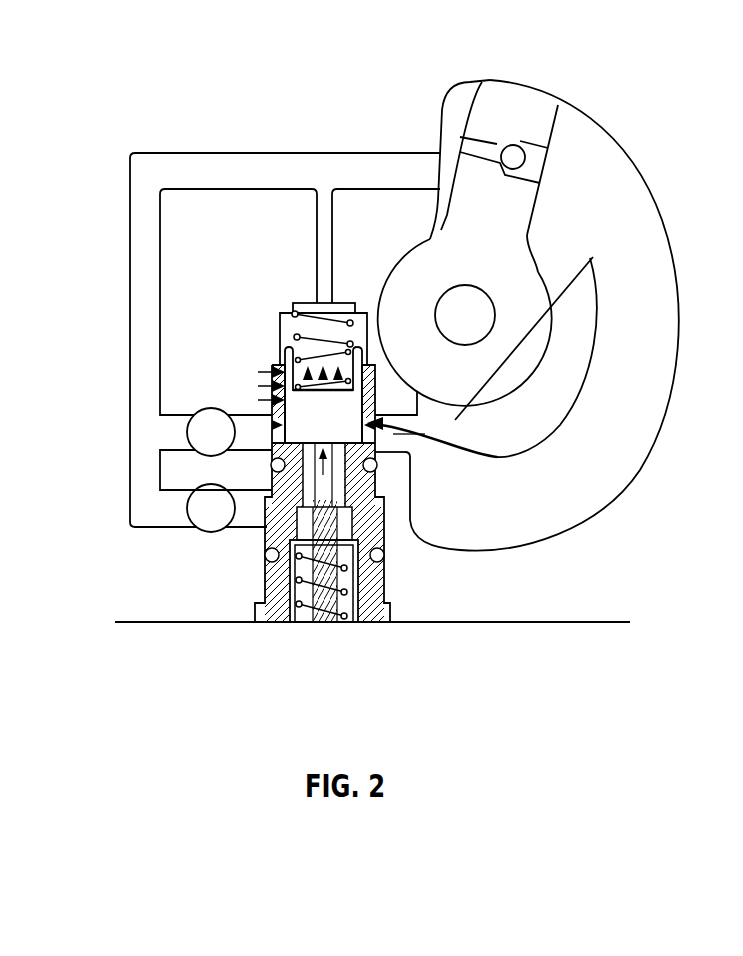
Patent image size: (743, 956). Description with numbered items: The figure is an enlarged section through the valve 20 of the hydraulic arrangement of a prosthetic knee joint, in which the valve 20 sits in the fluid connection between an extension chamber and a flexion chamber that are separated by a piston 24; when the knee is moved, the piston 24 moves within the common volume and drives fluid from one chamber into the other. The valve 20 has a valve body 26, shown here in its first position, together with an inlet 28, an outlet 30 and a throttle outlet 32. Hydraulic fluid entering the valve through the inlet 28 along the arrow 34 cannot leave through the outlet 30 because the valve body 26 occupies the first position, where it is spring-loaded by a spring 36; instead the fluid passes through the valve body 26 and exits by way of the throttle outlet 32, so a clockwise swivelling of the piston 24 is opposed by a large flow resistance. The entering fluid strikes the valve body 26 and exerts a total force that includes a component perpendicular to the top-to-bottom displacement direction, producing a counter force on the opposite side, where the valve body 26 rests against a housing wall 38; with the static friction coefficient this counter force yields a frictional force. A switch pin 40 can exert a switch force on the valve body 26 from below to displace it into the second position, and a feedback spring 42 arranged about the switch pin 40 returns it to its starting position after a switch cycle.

The valve 20 is at (247, 591).
The piston 24 is at (513, 205).
The valve body 26 is at (346, 420).
The inlet 28 is at (593, 257).
The outlet 30 is at (247, 520).
The throttle outlet 32 is at (160, 422).
The arrow 34 is at (580, 403).
The spring 36 is at (340, 303).
The housing wall 38 is at (288, 375).
The switch pin 40 is at (315, 618).
The feedback spring 42 is at (365, 620).